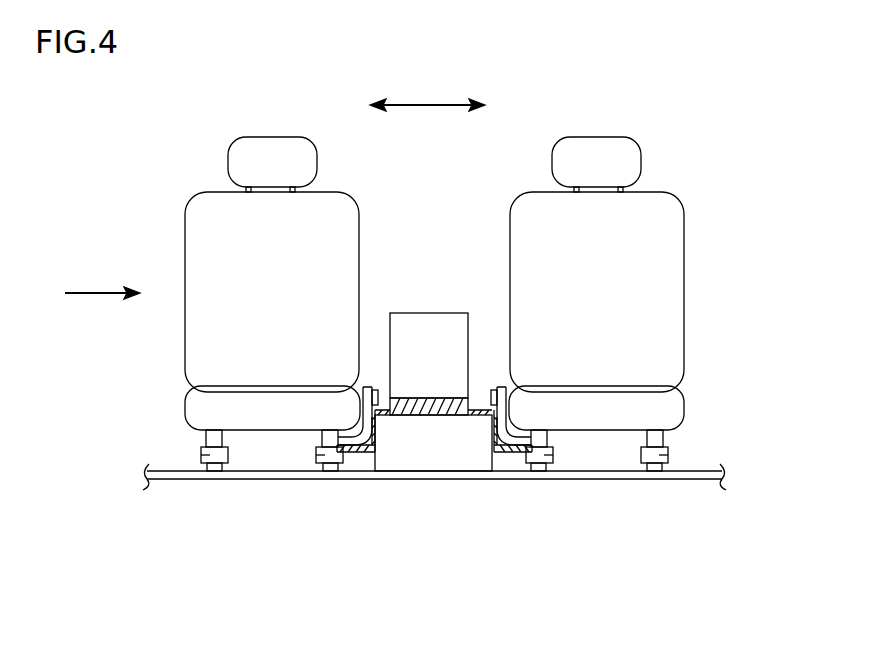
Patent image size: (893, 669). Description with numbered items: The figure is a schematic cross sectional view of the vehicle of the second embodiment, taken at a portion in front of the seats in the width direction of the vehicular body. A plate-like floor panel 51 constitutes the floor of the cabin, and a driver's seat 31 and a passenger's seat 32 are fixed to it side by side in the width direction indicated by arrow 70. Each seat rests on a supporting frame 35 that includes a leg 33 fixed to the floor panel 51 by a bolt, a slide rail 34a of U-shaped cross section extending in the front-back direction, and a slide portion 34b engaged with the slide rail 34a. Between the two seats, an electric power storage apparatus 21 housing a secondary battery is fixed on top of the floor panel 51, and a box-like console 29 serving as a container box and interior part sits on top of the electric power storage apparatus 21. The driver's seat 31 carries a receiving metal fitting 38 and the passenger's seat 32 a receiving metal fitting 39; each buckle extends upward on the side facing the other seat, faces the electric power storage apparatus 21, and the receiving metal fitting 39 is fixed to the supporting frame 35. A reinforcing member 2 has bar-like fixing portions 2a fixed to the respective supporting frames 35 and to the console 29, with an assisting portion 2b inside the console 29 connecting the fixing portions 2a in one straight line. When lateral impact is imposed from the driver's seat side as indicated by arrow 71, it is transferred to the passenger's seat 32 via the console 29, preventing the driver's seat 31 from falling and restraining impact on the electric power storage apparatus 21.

The reinforcing member 2 is at (434, 495).
The fixing portion 2a is at (493, 557).
The assisting portion 2b is at (429, 405).
The electric power storage apparatus 21 is at (452, 458).
The console 29 is at (430, 333).
The driver's seat 31 is at (185, 259).
The passenger's seat 32 is at (684, 261).
The leg 33 is at (214, 468).
The slide rail 34a is at (202, 456).
The slide portion 34b is at (202, 446).
The supporting frame 35 is at (248, 527).
The receiving metal fitting 38 is at (367, 387).
The receiving metal fitting 39 is at (498, 387).
The floor panel 51 is at (402, 473).
The arrow 70 is at (430, 103).
The arrow 71 is at (94, 296).